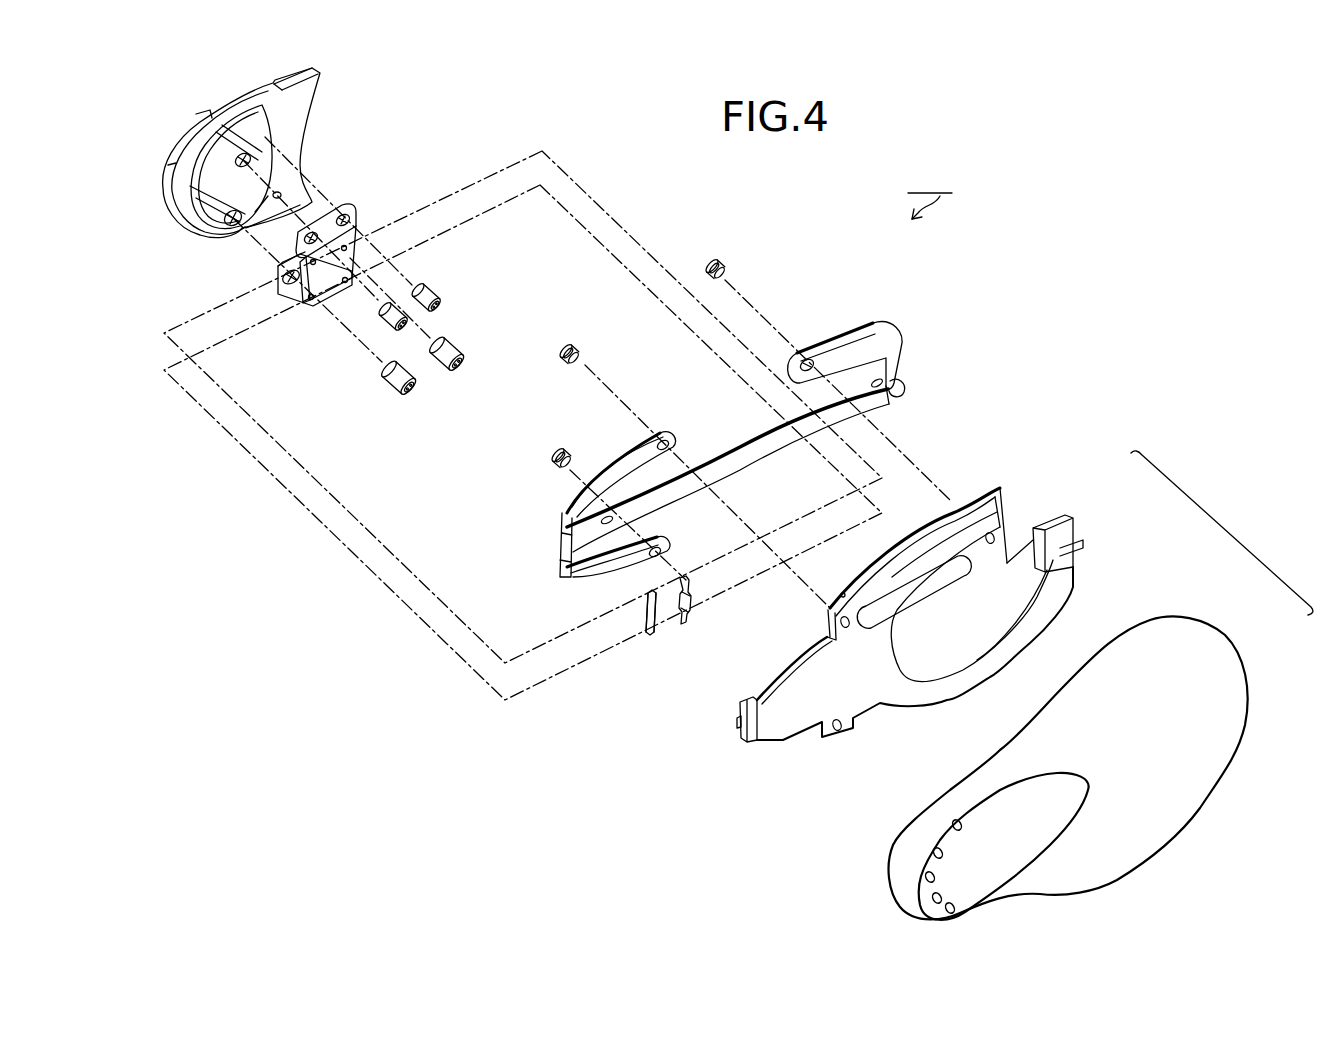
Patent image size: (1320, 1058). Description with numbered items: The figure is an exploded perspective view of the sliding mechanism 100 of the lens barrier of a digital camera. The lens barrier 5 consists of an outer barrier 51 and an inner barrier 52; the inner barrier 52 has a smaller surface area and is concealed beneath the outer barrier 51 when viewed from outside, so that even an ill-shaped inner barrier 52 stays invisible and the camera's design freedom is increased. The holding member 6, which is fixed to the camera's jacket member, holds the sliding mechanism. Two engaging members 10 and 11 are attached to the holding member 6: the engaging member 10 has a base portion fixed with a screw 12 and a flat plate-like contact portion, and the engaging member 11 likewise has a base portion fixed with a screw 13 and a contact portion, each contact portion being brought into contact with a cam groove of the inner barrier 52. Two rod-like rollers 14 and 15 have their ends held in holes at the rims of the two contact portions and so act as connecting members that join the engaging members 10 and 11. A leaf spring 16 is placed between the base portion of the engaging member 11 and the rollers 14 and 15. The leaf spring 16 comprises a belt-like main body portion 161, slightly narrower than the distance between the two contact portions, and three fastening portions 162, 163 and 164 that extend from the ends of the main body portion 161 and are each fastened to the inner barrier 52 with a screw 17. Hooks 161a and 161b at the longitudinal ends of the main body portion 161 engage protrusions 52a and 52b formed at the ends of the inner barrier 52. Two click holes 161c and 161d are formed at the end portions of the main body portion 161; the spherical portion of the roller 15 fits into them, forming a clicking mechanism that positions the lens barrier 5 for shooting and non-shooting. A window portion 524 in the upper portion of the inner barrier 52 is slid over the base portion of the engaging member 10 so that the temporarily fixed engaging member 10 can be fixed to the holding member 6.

The sliding mechanism 100 is at (930, 194).
The lens barrier 5 is at (976, 685).
The holding member 6 is at (313, 76).
The engaging member 10 is at (338, 206).
The engaging member 11 is at (277, 278).
The screw 12 is at (428, 292).
The screw 13 is at (455, 342).
The roller 14 is at (650, 617).
The roller 15 is at (684, 626).
The leaf spring 16 is at (732, 441).
The screw 17 is at (728, 268).
The outer barrier 51 is at (1213, 652).
The inner barrier 52 is at (902, 612).
The protrusion 52a is at (737, 722).
The protrusion 52b is at (1085, 540).
The window portion 524 is at (870, 612).
The main body portion 161 is at (732, 482).
The hook 161a is at (562, 538).
The hook 161b is at (905, 388).
The click hole 161c is at (896, 395).
The click hole 161d is at (618, 520).
The fastening portion 162 is at (632, 462).
The fastening portion 163 is at (598, 575).
The fastening portion 164 is at (842, 352).